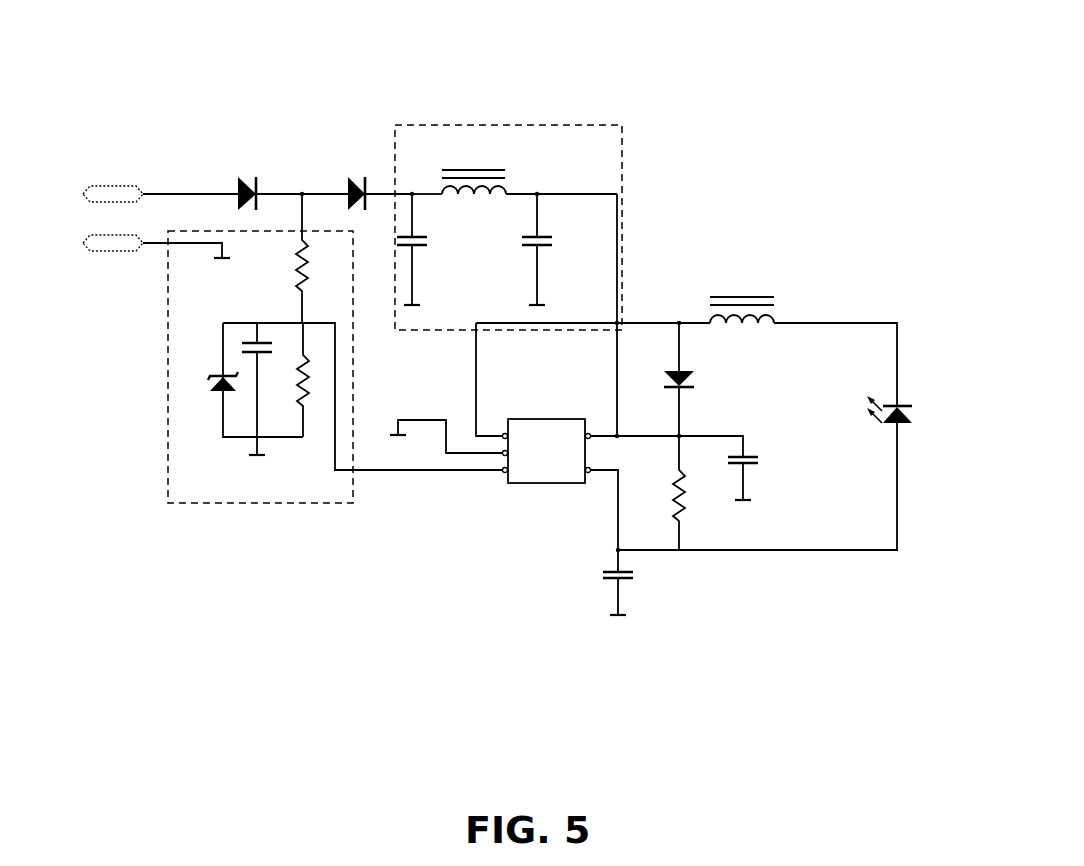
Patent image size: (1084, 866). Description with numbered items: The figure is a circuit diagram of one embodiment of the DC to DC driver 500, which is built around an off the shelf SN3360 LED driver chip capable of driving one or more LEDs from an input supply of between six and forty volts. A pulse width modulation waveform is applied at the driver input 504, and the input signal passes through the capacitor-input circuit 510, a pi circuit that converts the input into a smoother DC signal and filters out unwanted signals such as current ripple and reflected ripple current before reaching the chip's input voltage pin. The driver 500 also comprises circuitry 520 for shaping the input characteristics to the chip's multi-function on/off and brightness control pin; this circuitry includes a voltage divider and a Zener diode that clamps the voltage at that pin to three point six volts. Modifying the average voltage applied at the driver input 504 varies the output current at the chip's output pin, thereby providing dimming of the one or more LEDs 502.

The DC to DC driver 500 is at (447, 52).
The LEDs 502 is at (928, 385).
The driver input 504 is at (113, 188).
The capacitor-input circuit 510 is at (508, 215).
The circuitry for shaping input characteristics 520 is at (335, 382).